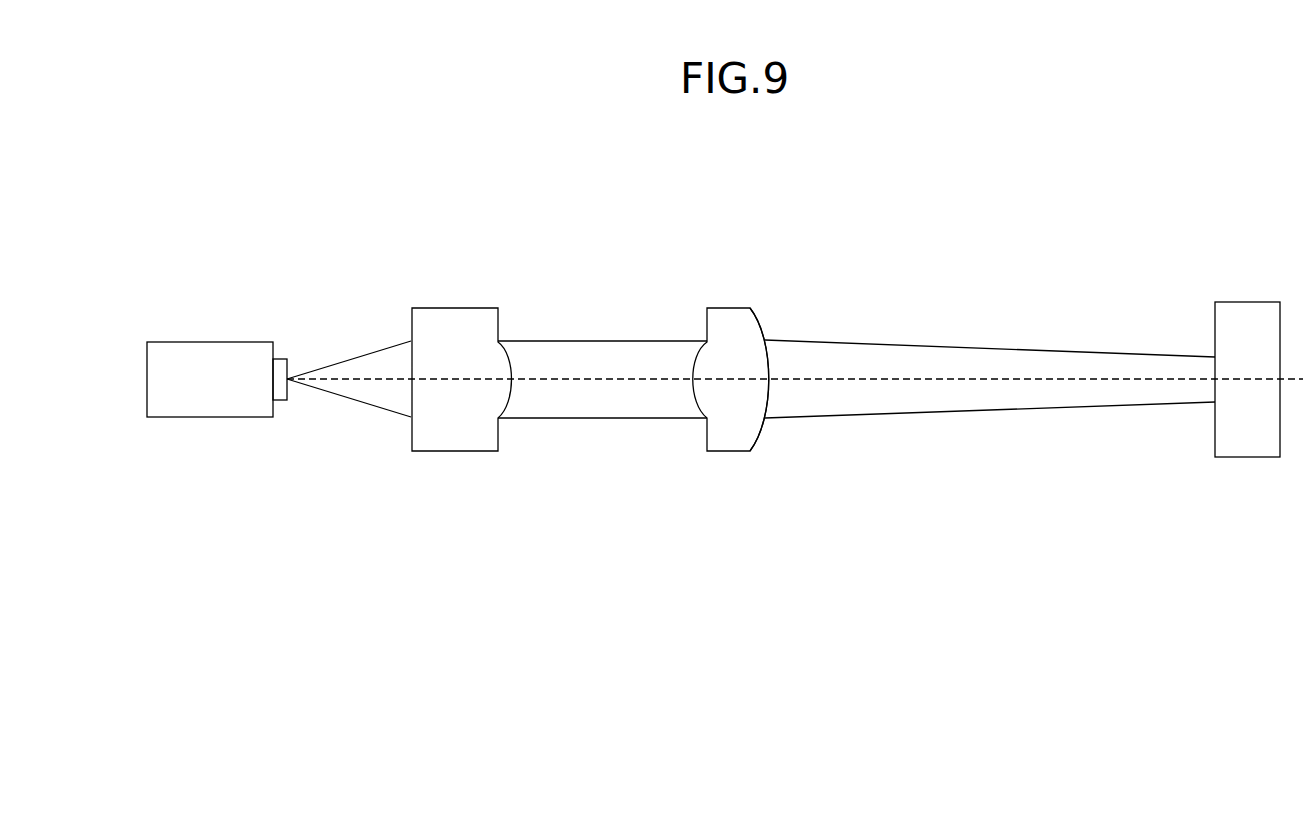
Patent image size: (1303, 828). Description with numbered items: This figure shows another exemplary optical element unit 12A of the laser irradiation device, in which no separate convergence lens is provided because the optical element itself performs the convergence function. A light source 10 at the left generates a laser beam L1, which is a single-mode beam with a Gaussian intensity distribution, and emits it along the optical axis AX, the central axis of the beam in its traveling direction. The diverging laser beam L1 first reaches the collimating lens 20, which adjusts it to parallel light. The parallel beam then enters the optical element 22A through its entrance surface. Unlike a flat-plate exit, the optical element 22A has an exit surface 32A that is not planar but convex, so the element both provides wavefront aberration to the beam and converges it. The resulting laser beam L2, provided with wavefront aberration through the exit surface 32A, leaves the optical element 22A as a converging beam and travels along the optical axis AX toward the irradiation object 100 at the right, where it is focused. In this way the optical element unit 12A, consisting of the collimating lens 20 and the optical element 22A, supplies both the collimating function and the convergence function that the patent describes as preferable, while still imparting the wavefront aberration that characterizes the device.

The optical element unit 12A is at (573, 190).
The light source 10 is at (235, 334).
The laser beam L1 is at (342, 400).
The collimating lens 20 is at (464, 301).
The optical element 22A is at (724, 301).
The exit surface 32A is at (764, 330).
The laser beam L2 is at (796, 420).
The optical axis AX is at (913, 380).
The irradiation object 100 is at (1254, 295).